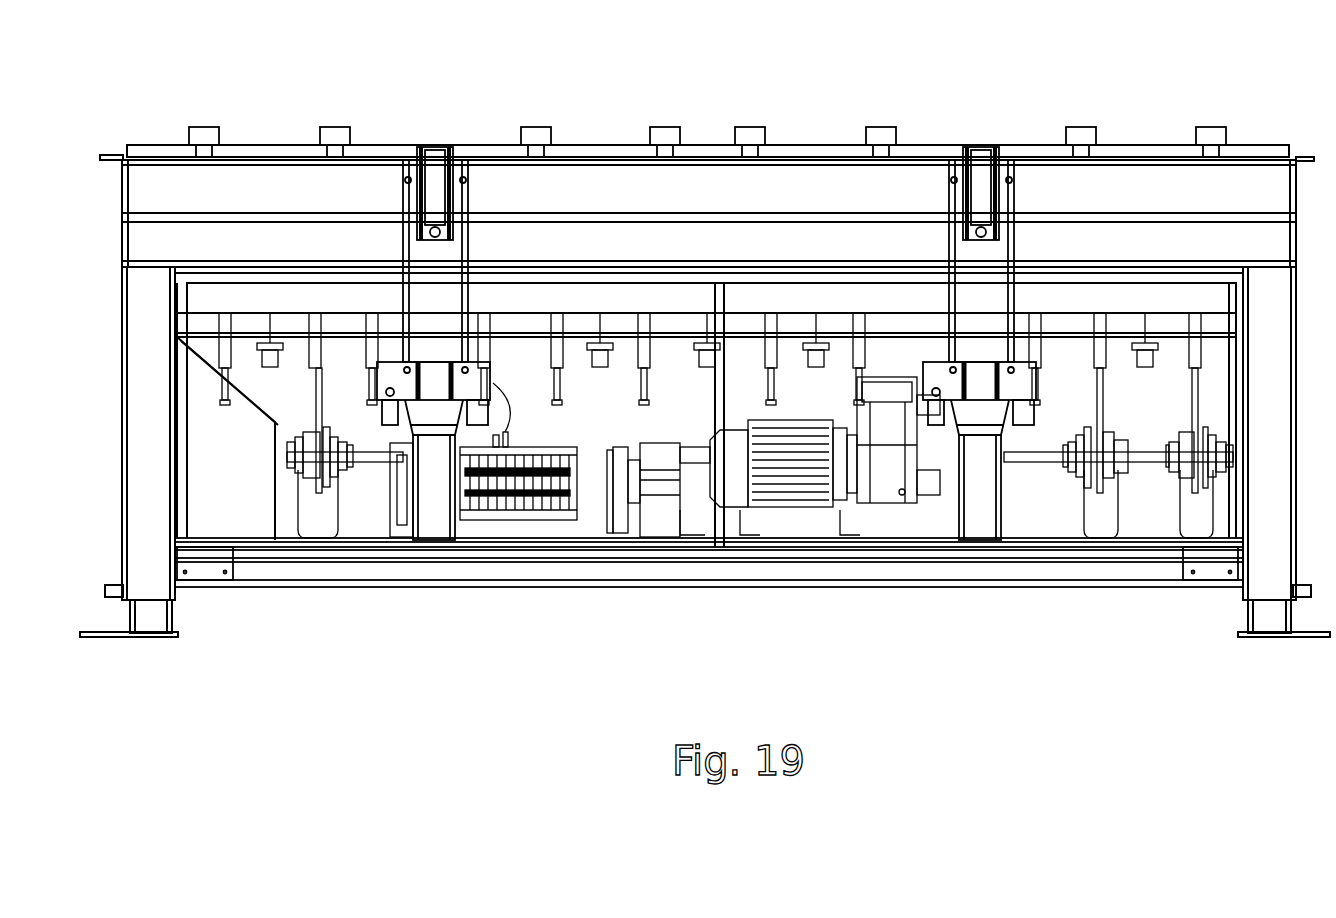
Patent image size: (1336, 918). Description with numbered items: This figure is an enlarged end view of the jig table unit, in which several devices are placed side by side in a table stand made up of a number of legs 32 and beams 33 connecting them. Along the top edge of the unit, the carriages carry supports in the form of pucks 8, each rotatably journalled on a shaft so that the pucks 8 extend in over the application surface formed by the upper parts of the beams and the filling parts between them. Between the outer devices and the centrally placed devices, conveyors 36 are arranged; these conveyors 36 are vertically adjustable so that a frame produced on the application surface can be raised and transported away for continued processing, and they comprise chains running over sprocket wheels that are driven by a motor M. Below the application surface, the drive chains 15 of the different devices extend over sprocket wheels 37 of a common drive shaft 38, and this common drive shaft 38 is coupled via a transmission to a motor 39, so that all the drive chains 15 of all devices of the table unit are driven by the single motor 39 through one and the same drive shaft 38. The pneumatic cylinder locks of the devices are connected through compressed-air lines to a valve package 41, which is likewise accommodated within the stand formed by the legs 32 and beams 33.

The support 8 is at (204, 125).
The conveyor 36 is at (433, 160).
The sprocket wheel 37 is at (307, 485).
The common drive shaft 38 is at (367, 460).
The motor 39 is at (493, 433).
The valve package 41 is at (540, 517).
The beam 33 is at (612, 568).
The motor M is at (740, 487).
The drive chain 15 is at (1120, 470).
The leg 32 is at (158, 580).